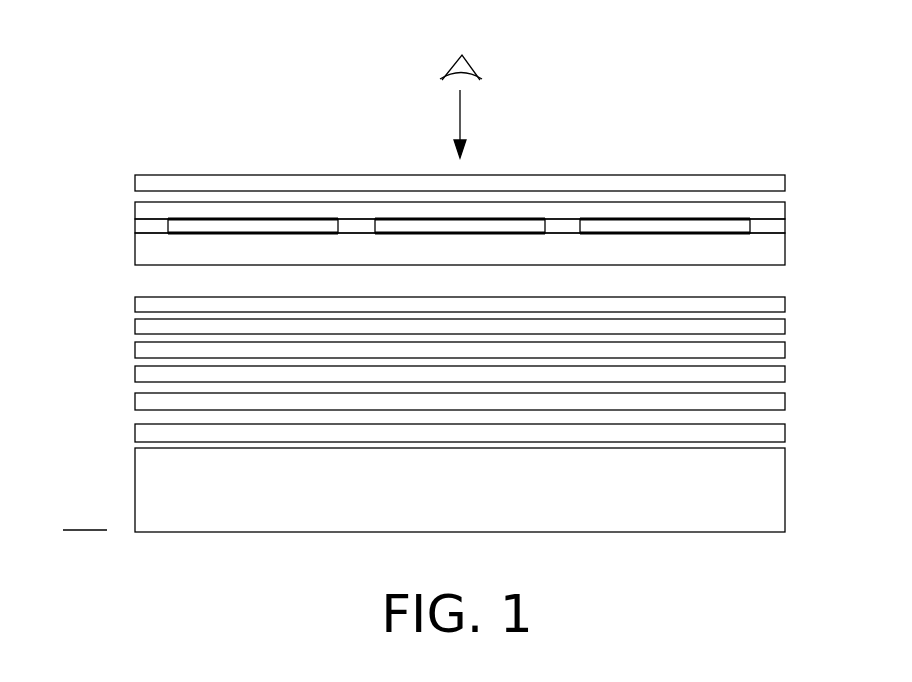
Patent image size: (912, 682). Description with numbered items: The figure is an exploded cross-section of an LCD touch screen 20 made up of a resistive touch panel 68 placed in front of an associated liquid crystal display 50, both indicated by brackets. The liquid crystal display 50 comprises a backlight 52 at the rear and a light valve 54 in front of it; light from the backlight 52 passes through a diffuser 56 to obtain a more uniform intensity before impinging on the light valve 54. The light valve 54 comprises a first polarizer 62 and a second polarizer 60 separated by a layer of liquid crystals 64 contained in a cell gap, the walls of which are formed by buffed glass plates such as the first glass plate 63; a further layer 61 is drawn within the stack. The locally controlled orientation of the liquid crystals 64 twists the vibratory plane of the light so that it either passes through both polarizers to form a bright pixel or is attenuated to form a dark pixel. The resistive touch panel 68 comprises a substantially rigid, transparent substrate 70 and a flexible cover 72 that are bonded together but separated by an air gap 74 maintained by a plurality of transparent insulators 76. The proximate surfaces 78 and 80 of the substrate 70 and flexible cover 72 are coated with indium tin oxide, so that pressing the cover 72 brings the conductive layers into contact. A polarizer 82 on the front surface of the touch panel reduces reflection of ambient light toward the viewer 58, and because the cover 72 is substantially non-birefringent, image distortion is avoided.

The LCD touch screen 20 is at (118, 546).
The liquid crystal display 50 is at (436, 410).
The backlight 52 is at (787, 483).
The light valve 54 is at (462, 353).
The diffuser 56 is at (787, 430).
The viewer 58 is at (471, 63).
The second polarizer 60 is at (787, 300).
The optical film layer 61 is at (787, 375).
The first polarizer 62 is at (787, 400).
The first glass plate 63 is at (787, 325).
The layer of liquid crystals 64 is at (787, 350).
The resistive touch panel 68 is at (462, 204).
The substrate 70 is at (787, 252).
The flexible cover 72 is at (787, 204).
The air gap 74 is at (685, 226).
The transparent insulators 76 is at (490, 191).
The conductive surface layer 78 is at (482, 226).
The conductive surface layer 80 is at (273, 226).
The polarizer 82 is at (787, 178).